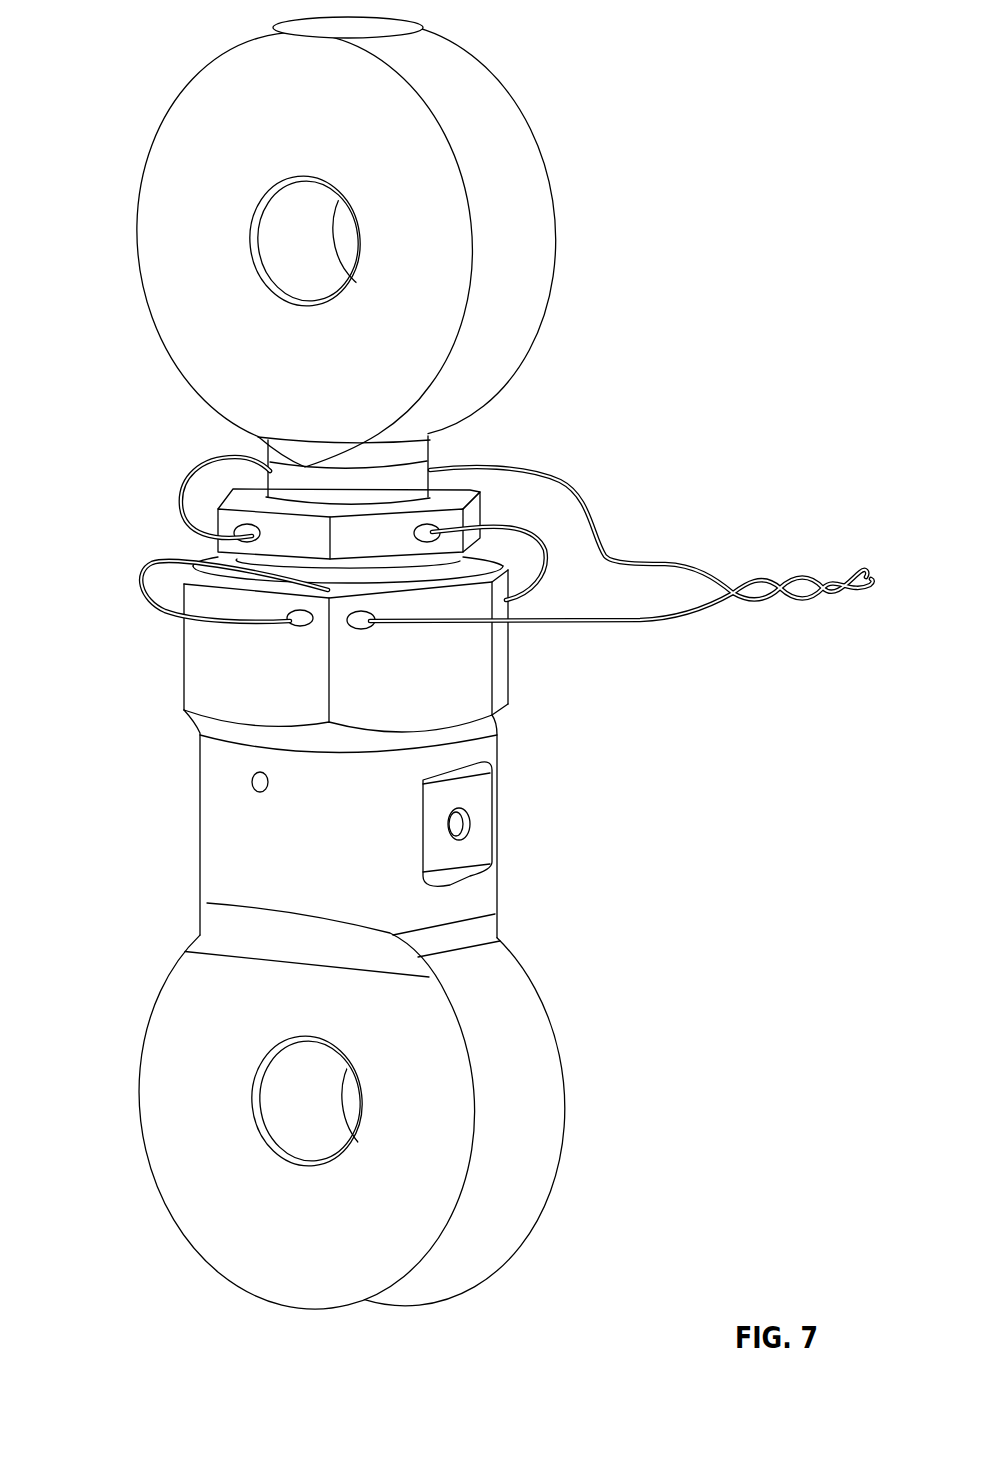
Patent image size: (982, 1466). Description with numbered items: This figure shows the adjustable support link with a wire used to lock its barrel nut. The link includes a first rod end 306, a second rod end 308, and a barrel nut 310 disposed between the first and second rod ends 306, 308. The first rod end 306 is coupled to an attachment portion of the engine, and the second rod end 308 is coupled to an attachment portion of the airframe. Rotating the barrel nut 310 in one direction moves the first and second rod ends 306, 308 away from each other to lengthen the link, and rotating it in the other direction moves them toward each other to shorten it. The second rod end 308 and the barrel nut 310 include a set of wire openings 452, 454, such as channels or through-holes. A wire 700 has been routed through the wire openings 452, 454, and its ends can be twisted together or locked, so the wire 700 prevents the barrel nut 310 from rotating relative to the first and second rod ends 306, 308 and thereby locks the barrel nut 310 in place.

The first rod end 306 is at (187, 313).
The second rod end 308 is at (223, 810).
The barrel nut 310 is at (218, 510).
The wire openings 452 is at (362, 627).
The wire openings 454 is at (237, 539).
The wire 700 is at (690, 621).